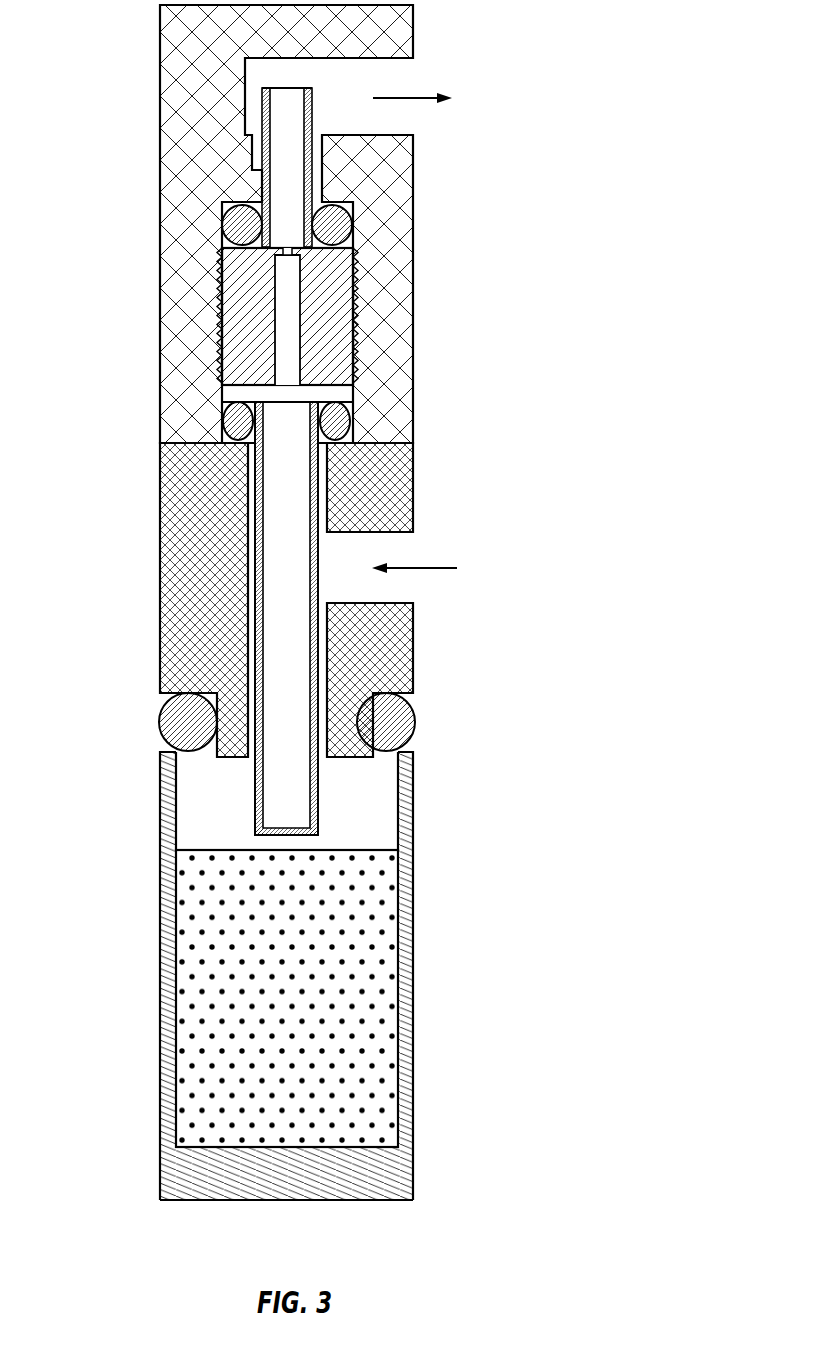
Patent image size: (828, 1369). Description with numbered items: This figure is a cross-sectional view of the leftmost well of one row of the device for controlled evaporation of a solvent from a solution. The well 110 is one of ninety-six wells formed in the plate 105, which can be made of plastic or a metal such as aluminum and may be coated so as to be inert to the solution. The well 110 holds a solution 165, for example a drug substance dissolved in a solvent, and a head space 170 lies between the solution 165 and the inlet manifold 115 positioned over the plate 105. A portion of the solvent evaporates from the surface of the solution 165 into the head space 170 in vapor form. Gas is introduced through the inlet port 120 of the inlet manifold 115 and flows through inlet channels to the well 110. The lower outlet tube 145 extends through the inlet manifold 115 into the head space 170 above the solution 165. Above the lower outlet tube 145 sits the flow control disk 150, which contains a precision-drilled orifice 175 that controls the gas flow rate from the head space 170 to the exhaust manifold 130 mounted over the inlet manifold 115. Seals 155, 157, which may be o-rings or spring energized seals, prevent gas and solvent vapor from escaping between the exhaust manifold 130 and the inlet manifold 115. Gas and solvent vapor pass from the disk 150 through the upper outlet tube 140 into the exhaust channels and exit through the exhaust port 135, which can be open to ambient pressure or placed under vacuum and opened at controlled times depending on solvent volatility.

The plate 105 is at (170, 1182).
The well 110 is at (170, 957).
The inlet manifold 115 is at (172, 593).
The inlet port 120 is at (493, 569).
The exhaust manifold 130 is at (167, 63).
The exhaust port 135 is at (481, 99).
The upper outlet tube 140 is at (262, 170).
The lower outlet tube 145 is at (260, 508).
The flow control disk 150 is at (237, 317).
The seal 155 is at (232, 225).
The seal 157 is at (232, 417).
The solution 165 is at (313, 990).
The head space 170 is at (387, 787).
The orifice 175 is at (288, 252).